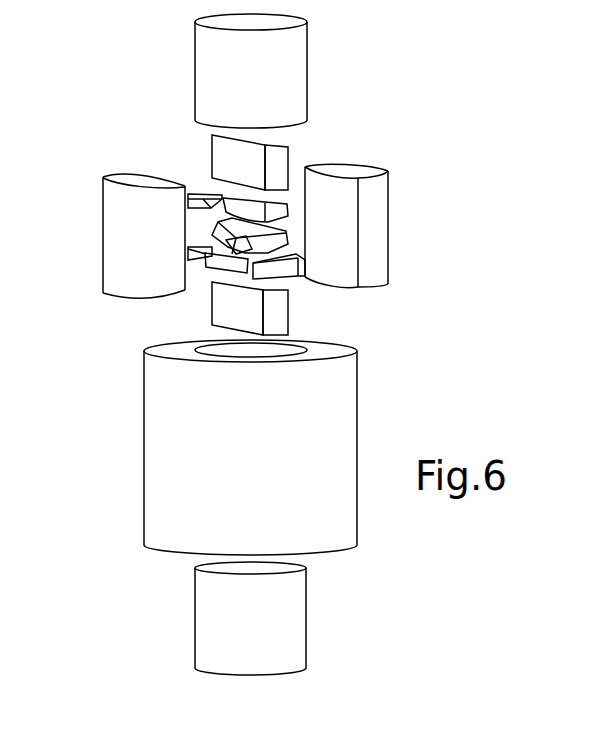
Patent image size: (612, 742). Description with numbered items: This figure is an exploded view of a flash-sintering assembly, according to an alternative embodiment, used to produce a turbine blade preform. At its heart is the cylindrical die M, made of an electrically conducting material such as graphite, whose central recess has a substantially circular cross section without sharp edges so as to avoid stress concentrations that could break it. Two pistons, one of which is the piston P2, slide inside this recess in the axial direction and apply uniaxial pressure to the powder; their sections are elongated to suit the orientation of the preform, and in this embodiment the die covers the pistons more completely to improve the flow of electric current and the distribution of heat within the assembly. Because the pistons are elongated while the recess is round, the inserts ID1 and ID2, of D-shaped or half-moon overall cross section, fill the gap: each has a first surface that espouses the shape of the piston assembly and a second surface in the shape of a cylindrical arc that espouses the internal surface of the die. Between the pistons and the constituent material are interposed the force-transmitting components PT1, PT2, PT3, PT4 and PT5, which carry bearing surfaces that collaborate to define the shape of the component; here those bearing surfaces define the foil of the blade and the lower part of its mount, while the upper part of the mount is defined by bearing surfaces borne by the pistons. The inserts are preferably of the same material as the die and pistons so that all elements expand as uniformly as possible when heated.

The piston P2 is at (218, 148).
The force-transmitting component PT4 is at (197, 196).
The insert ID2 is at (112, 207).
The force-transmitting component PT5 is at (195, 258).
The force-transmitting component PT1 is at (275, 210).
The insert ID1 is at (377, 210).
The force-transmitting component PT3 is at (220, 265).
The force-transmitting component PT2 is at (298, 270).
The die M is at (162, 425).